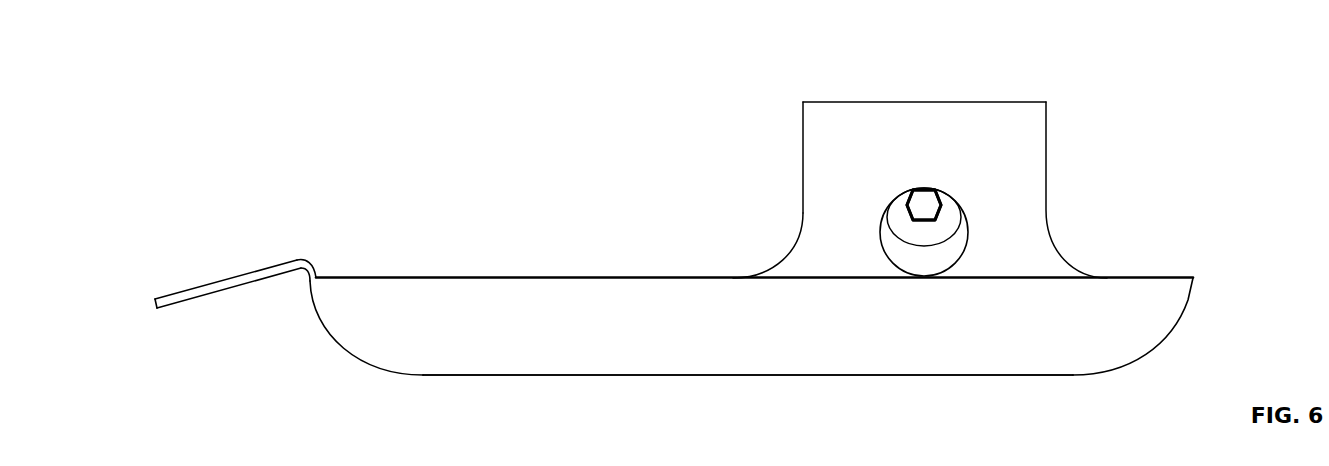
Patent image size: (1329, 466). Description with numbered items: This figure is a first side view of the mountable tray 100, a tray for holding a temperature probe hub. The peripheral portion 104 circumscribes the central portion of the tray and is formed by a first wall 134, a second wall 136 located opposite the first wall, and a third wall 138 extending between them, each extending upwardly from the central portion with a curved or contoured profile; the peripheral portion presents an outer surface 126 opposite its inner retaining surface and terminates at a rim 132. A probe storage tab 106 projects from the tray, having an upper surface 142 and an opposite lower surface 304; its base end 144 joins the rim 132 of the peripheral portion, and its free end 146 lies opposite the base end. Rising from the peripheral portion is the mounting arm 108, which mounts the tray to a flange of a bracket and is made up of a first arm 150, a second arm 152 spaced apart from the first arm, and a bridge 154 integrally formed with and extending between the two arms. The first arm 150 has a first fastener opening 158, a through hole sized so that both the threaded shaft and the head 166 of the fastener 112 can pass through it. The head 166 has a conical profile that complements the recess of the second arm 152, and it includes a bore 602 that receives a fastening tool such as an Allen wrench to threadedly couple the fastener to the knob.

The mountable tray 100 is at (1130, 43).
The peripheral portion 104 is at (685, 277).
The probe storage tab 106 is at (190, 287).
The mounting arm 108 is at (1047, 150).
The fastener 112 is at (897, 217).
The outer surface 126 is at (480, 312).
The rim 132 is at (550, 277).
The first wall 134 is at (318, 302).
The second wall 136 is at (1188, 303).
The third wall 138 is at (633, 312).
The upper surface 142 is at (236, 277).
The base end 144 is at (300, 258).
The free end 146 is at (158, 293).
The first arm 150 is at (847, 125).
The second arm 152 is at (940, 255).
The bridge 154 is at (912, 102).
The first fastener opening 158 is at (953, 202).
The head 166 is at (950, 212).
The lower surface 304 is at (198, 300).
The bore 602 is at (925, 200).